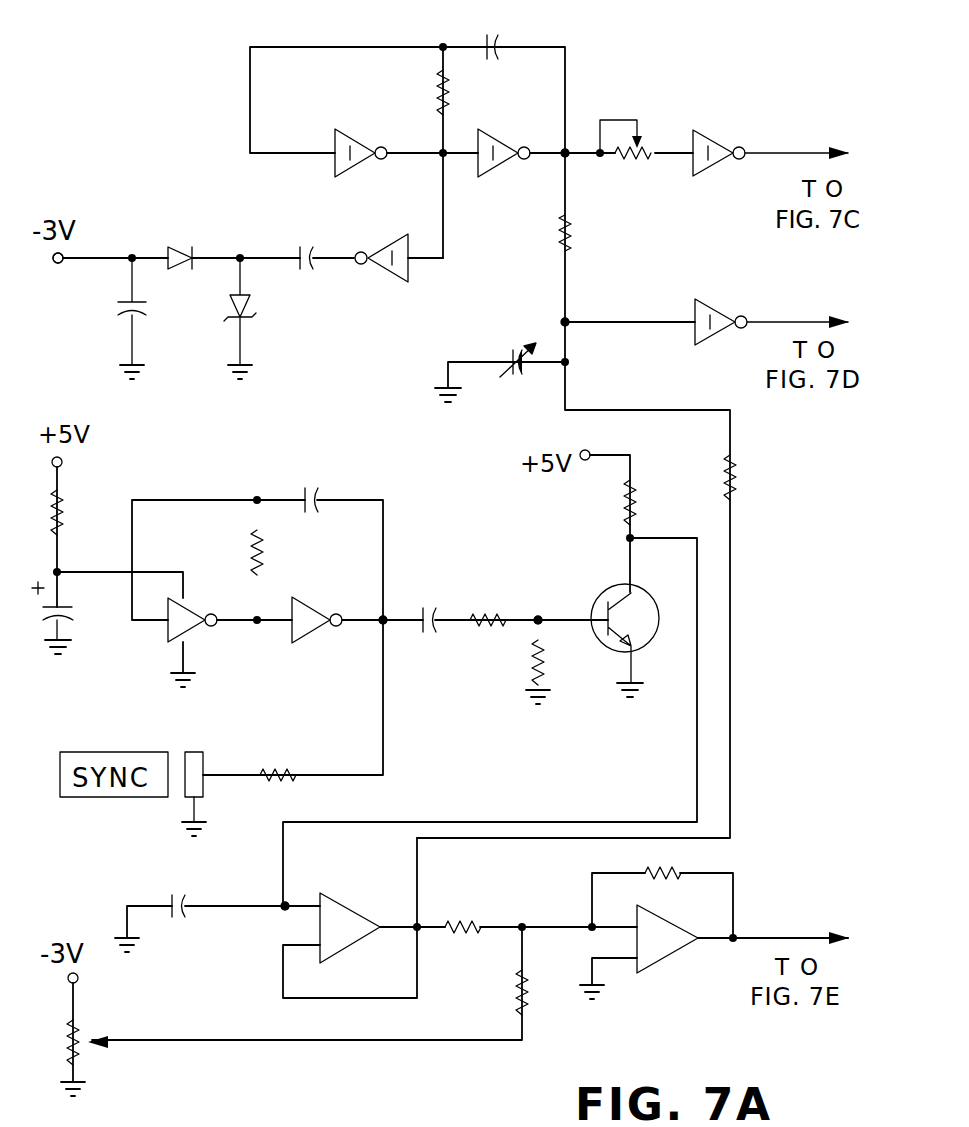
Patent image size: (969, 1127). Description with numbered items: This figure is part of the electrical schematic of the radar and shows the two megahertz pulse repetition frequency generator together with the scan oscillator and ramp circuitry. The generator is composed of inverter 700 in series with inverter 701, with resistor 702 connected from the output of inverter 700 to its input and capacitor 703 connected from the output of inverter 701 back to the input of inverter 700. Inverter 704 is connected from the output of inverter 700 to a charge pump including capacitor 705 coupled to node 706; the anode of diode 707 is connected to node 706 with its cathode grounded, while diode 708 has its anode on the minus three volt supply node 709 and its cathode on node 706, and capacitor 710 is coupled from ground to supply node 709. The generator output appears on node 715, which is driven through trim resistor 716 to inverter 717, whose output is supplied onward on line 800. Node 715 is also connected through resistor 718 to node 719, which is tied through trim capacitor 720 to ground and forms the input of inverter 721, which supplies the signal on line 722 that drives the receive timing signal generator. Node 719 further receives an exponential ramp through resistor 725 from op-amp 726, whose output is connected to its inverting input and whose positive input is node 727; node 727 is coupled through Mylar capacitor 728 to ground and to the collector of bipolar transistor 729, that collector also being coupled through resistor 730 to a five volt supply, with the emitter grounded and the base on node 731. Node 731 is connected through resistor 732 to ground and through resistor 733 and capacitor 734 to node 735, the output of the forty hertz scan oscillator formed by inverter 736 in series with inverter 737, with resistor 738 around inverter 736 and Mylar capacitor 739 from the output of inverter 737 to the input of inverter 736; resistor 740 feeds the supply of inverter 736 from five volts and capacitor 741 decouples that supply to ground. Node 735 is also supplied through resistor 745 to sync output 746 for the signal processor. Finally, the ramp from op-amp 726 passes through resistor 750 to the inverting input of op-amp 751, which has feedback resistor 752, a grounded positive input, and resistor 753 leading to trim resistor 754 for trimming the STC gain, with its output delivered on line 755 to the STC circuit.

The inverter 700 is at (333, 142).
The inverter 701 is at (494, 139).
The resistor 702 is at (437, 90).
The capacitor 703 is at (502, 41).
The inverter 704 is at (408, 273).
The capacitor 705 is at (314, 273).
The node 706 is at (240, 256).
The diode 707 is at (250, 311).
The diode 708 is at (177, 244).
The −3 volt supply node 709 is at (58, 266).
The capacitor 710 is at (134, 314).
The node 715 is at (565, 164).
The trim resistor 716 is at (642, 163).
The inverter 717 is at (693, 133).
The resistor 718 is at (574, 230).
The node 719 is at (569, 326).
The trim capacitor 720 is at (526, 380).
The inverter 721 is at (712, 305).
The line 722 is at (781, 322).
The resistor 725 is at (738, 480).
The op-amp 726 is at (356, 900).
The node 727 is at (282, 904).
The Mylar capacitor 728 is at (170, 900).
The bipolar transistor 729 is at (614, 656).
The resistor 730 is at (630, 502).
The node 731 is at (542, 617).
The resistor 732 is at (534, 671).
The resistor 733 is at (500, 608).
The capacitor 734 is at (421, 602).
The node 735 is at (384, 628).
The inverter 736 is at (210, 628).
The inverter 737 is at (310, 606).
The resistor 738 is at (256, 548).
The Mylar capacitor 739 is at (304, 491).
The resistor 740 is at (70, 506).
The capacitor 741 is at (75, 620).
The resistor 745 is at (277, 770).
The sync output 746 is at (198, 751).
The resistor 750 is at (462, 918).
The op-amp 751 is at (650, 976).
The resistor 752 is at (680, 873).
The resistor 753 is at (520, 990).
The trim resistor 754 is at (88, 1034).
The line 755 is at (783, 938).
The output line 800 is at (768, 149).